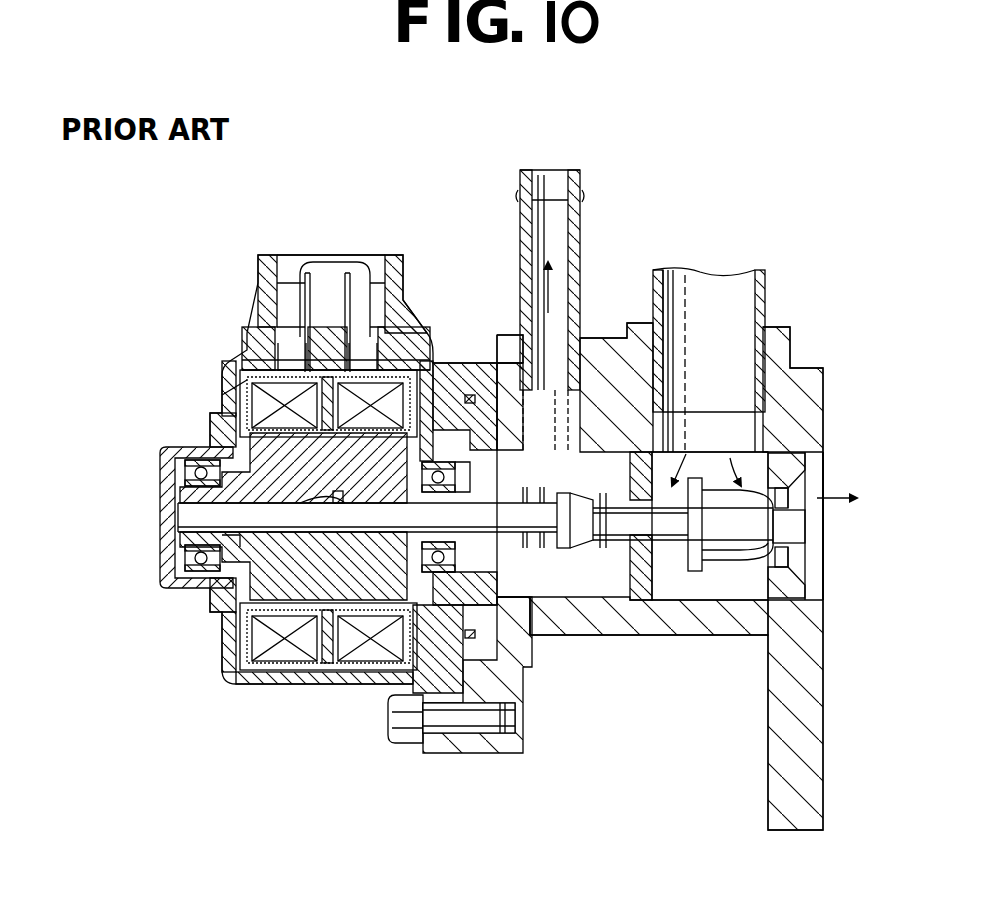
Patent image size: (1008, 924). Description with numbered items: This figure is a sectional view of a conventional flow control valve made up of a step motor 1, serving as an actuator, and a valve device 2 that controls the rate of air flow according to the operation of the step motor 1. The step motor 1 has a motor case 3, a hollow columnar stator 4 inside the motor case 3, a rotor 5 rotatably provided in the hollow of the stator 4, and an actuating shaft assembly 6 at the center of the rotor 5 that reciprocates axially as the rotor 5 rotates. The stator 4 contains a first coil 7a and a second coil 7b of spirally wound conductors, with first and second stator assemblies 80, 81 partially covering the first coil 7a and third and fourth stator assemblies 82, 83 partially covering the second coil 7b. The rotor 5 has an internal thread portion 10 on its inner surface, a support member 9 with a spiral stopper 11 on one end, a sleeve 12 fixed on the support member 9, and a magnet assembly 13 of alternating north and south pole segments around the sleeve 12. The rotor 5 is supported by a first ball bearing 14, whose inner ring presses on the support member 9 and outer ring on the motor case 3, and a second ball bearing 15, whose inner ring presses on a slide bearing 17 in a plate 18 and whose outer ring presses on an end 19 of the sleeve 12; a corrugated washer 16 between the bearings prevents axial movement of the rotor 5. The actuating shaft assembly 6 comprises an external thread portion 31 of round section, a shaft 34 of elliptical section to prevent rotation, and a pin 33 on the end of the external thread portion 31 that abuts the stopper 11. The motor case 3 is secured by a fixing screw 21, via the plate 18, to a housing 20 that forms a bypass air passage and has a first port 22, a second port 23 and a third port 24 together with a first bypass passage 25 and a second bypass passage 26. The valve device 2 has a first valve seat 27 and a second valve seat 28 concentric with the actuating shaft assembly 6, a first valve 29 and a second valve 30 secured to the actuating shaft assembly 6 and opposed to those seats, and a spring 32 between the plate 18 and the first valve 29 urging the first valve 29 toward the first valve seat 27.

The step motor 1 is at (230, 686).
The valve device 2 is at (705, 652).
The motor case 3 is at (227, 393).
The stator 4 is at (217, 643).
The rotor 5 is at (213, 437).
The actuating shaft assembly 6 is at (400, 518).
The first coil 7a is at (280, 668).
The second coil 7b is at (367, 668).
The support member 9 is at (193, 495).
The internal thread portion 10 is at (343, 502).
The spiral stopper 11 is at (408, 378).
The sleeve 12 is at (213, 607).
The magnet assembly 13 is at (213, 440).
The first ball bearing 14 is at (183, 562).
The second ball bearing 15 is at (472, 398).
The corrugated washer 16 is at (183, 472).
The slide bearing 17 is at (543, 552).
The plate 18 is at (503, 338).
The end of the sleeve 19 is at (438, 460).
The housing 20 is at (684, 625).
The fixing screw 21 is at (393, 717).
The first port 22 is at (548, 180).
The second port 23 is at (718, 290).
The third port 24 is at (810, 525).
The first bypass passage 25 is at (604, 603).
The second bypass passage 26 is at (737, 457).
The first valve seat 27 is at (613, 480).
The second valve seat 28 is at (790, 465).
The first valve 29 is at (574, 480).
The second valve 30 is at (730, 550).
The external thread portion 31 is at (182, 532).
The spring 32 is at (574, 603).
The pin 33 is at (437, 400).
The shaft 34 is at (483, 735).
The first stator assembly 80 is at (230, 395).
The second stator assembly 81 is at (325, 335).
The third stator assembly 82 is at (403, 732).
The fourth stator assembly 83 is at (328, 672).